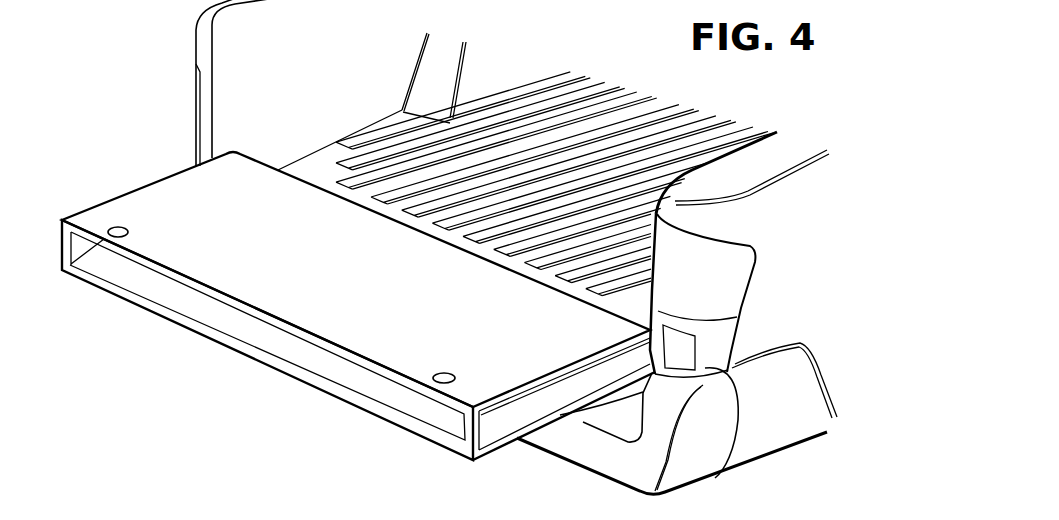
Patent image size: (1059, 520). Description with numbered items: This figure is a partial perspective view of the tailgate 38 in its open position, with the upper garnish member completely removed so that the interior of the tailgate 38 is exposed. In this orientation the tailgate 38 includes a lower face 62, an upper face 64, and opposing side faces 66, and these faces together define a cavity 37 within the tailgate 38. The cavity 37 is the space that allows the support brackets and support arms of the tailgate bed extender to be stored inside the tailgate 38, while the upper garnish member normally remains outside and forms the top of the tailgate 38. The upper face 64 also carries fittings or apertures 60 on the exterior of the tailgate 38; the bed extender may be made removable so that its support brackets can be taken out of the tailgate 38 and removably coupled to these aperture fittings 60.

The cavity 37 is at (293, 352).
The tailgate 38 is at (85, 187).
The aperture fitting 60 is at (129, 233).
The lower face 62 is at (160, 295).
The upper face 64 is at (236, 207).
The opposing side faces 66 is at (61, 252).